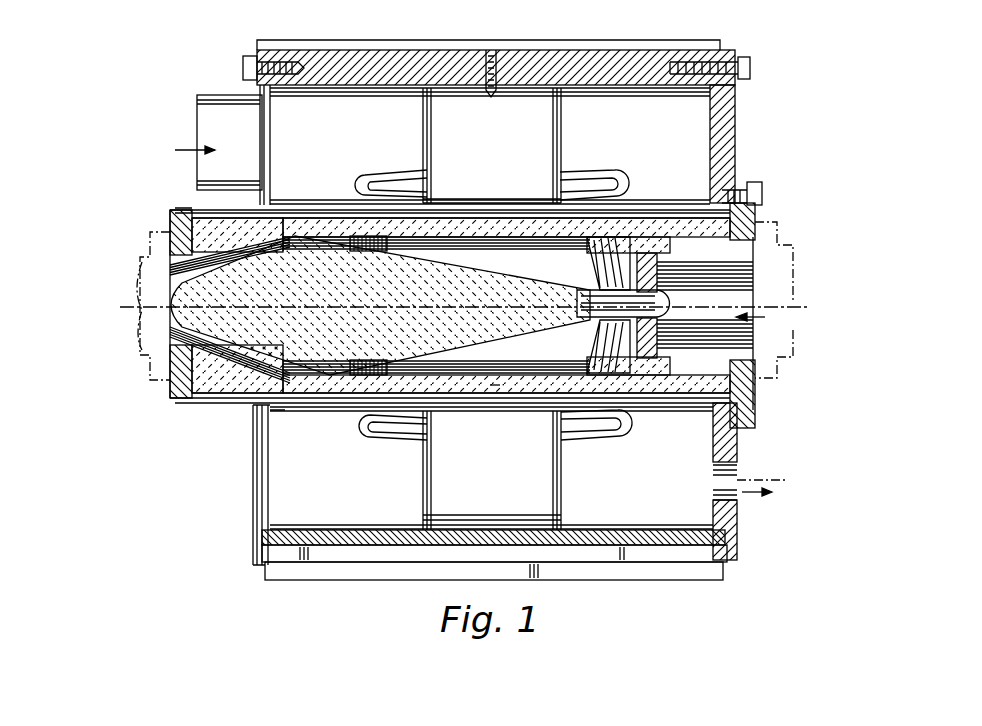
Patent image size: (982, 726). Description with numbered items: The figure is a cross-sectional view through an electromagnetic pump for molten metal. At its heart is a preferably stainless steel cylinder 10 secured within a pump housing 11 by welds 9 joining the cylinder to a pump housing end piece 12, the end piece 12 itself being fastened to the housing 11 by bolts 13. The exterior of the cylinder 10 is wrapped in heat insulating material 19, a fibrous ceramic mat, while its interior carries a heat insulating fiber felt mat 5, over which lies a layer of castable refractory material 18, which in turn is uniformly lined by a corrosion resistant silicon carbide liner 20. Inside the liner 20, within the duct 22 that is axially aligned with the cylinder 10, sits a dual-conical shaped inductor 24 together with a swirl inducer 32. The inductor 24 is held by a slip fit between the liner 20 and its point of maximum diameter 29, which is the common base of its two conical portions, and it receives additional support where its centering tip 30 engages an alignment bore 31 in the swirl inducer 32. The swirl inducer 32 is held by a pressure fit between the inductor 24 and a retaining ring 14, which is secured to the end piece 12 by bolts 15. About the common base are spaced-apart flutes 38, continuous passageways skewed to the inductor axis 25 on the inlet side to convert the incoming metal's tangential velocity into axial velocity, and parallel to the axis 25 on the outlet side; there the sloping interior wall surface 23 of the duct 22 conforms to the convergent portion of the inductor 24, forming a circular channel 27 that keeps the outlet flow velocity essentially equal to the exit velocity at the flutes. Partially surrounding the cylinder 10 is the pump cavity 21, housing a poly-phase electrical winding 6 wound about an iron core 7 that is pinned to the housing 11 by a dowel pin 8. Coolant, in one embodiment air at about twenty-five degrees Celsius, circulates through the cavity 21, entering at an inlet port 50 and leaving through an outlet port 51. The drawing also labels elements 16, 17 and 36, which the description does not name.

The heat insulating fiber felt mat 5 is at (350, 400).
The poly-phase electrical winding 6 is at (593, 178).
The iron core 7 is at (425, 124).
The dowel pin 8 is at (491, 50).
The welds 9 is at (712, 196).
The cylinder 10 is at (195, 405).
The pump housing 11 is at (598, 42).
The pump housing end piece 12 is at (738, 136).
The bolts 13 is at (752, 70).
The retaining ring 14 is at (757, 426).
The bolts 15 is at (760, 188).
The end walls 16 is at (258, 90).
The screw 17 is at (243, 67).
The refractory material 18 is at (218, 405).
The heat insulating material 19 is at (183, 208).
The silicon carbide liner 20 is at (521, 237).
The pump cavity 21 is at (666, 148).
The duct 22 is at (492, 386).
The sloping interior wall surface of duct 23 is at (235, 262).
The dual-conical shaped inductor 24 is at (425, 339).
The inductor axis 25 is at (800, 307).
The circular channel 27 is at (262, 407).
The point of maximum diameter 29 is at (350, 226).
The centering tip 30 is at (672, 288).
The alignment bore 31 is at (665, 327).
The swirl inducer 32 is at (757, 268).
The lower refractory liner 36 is at (590, 358).
The flutes 38 is at (343, 396).
The inlet port 50 is at (197, 129).
The outlet port 51 is at (740, 478).